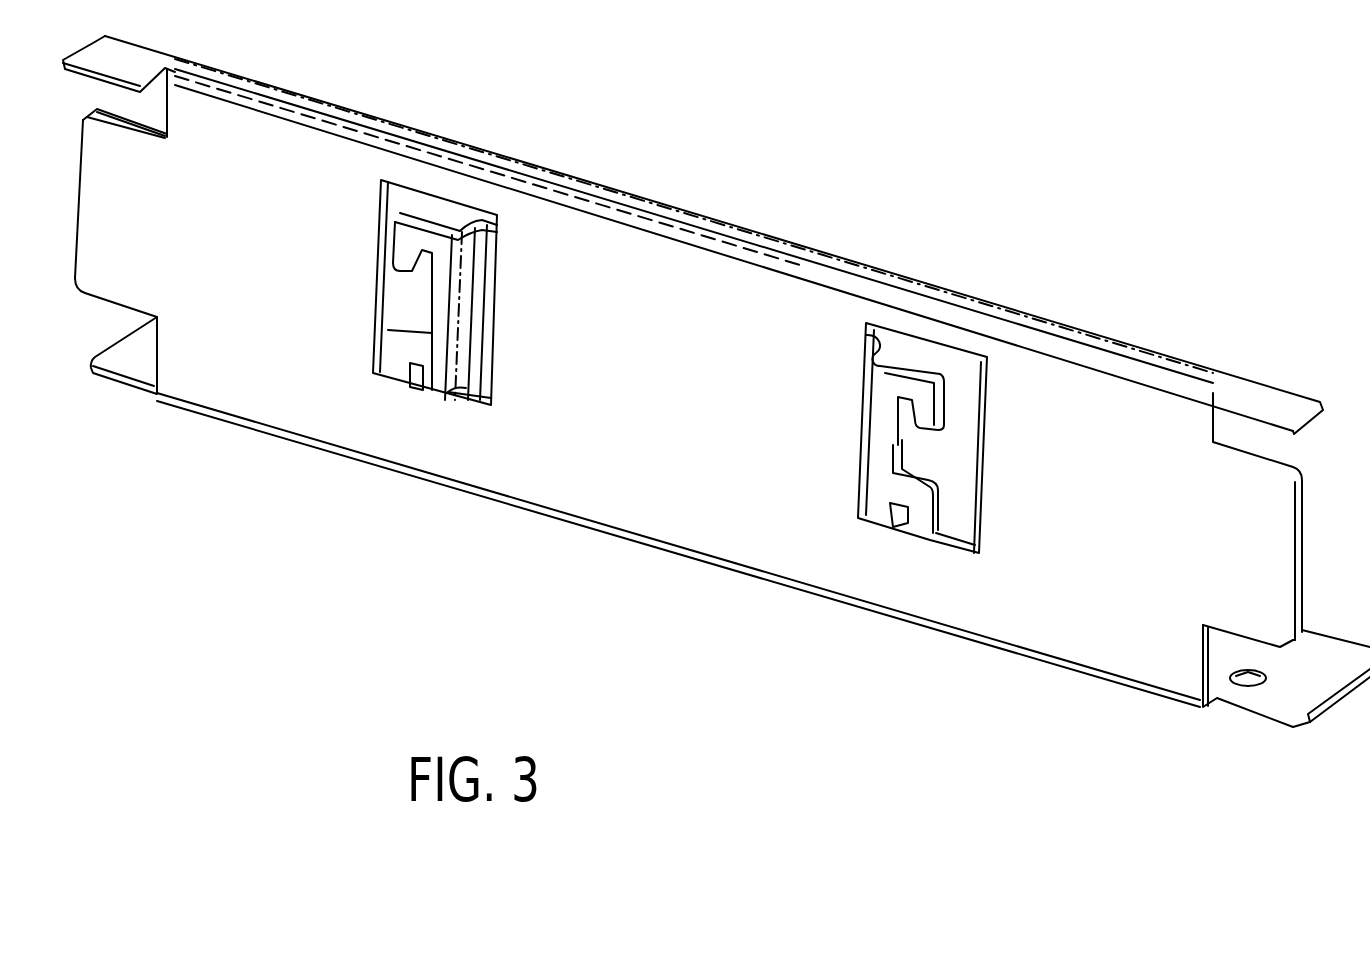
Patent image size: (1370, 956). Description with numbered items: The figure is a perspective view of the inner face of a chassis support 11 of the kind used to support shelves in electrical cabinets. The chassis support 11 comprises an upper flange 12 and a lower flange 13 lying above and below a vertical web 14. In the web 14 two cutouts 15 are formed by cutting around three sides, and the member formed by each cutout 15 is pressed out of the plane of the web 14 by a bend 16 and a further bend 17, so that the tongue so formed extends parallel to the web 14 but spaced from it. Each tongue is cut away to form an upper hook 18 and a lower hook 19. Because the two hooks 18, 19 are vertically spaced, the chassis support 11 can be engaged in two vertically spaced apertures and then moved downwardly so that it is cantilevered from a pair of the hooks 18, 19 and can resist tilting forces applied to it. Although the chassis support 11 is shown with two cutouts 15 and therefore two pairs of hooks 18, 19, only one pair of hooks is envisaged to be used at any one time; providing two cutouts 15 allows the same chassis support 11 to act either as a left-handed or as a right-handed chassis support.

The chassis support 11 is at (1143, 415).
The upper flange 12 is at (735, 240).
The lower flange 13 is at (727, 562).
The vertical web 14 is at (590, 486).
The cutout 15 is at (415, 200).
The bend 16 is at (472, 330).
The further bend 17 is at (445, 392).
The upper hook 18 is at (403, 242).
The lower hook 19 is at (398, 347).